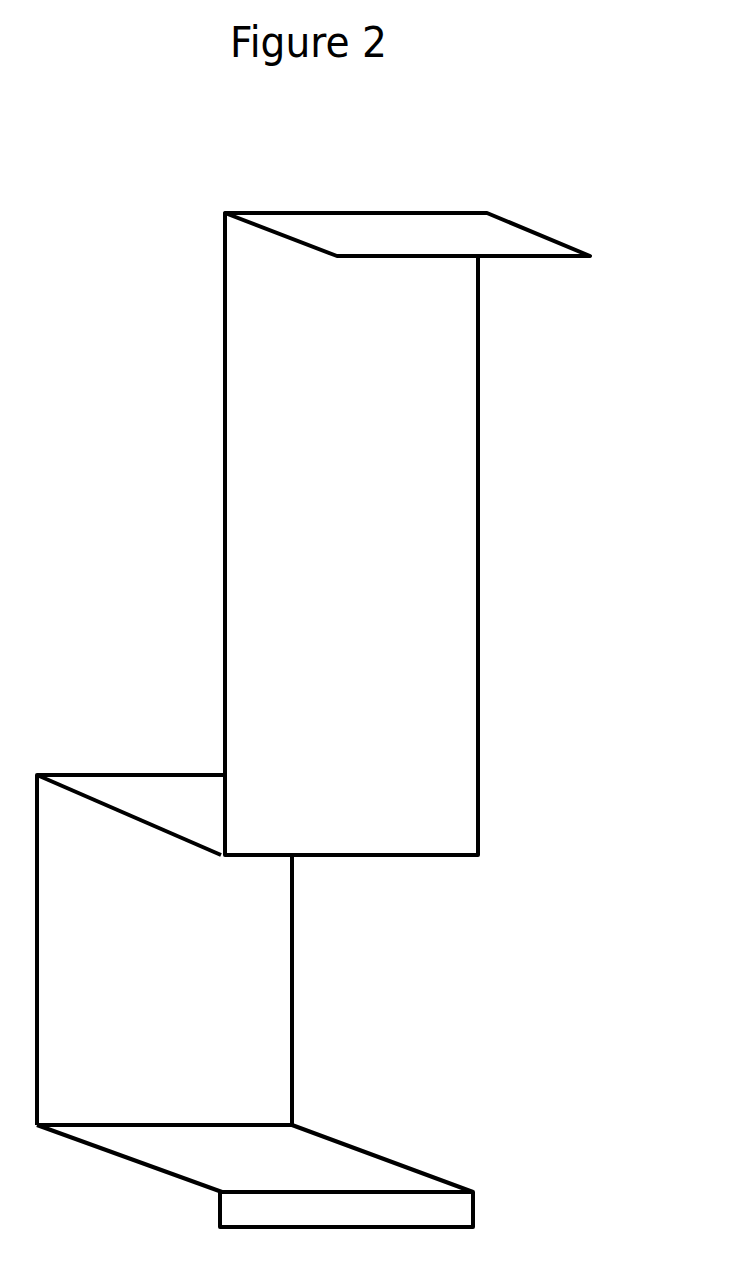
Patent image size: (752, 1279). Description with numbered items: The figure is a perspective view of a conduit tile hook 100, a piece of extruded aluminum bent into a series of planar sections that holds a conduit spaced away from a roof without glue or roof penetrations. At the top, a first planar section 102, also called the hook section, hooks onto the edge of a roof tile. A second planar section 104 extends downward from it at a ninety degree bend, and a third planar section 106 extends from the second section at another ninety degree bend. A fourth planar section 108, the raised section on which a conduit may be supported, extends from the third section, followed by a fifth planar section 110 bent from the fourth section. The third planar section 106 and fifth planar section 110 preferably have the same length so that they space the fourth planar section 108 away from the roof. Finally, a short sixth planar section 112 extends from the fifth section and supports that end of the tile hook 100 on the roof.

The tile hook 100 is at (640, 480).
The first planar section 102 is at (513, 233).
The second planar section 104 is at (479, 480).
The third planar section 106 is at (193, 813).
The fourth planar section 108 is at (293, 982).
The fifth planar section 110 is at (242, 1162).
The sixth planar section 112 is at (475, 1209).